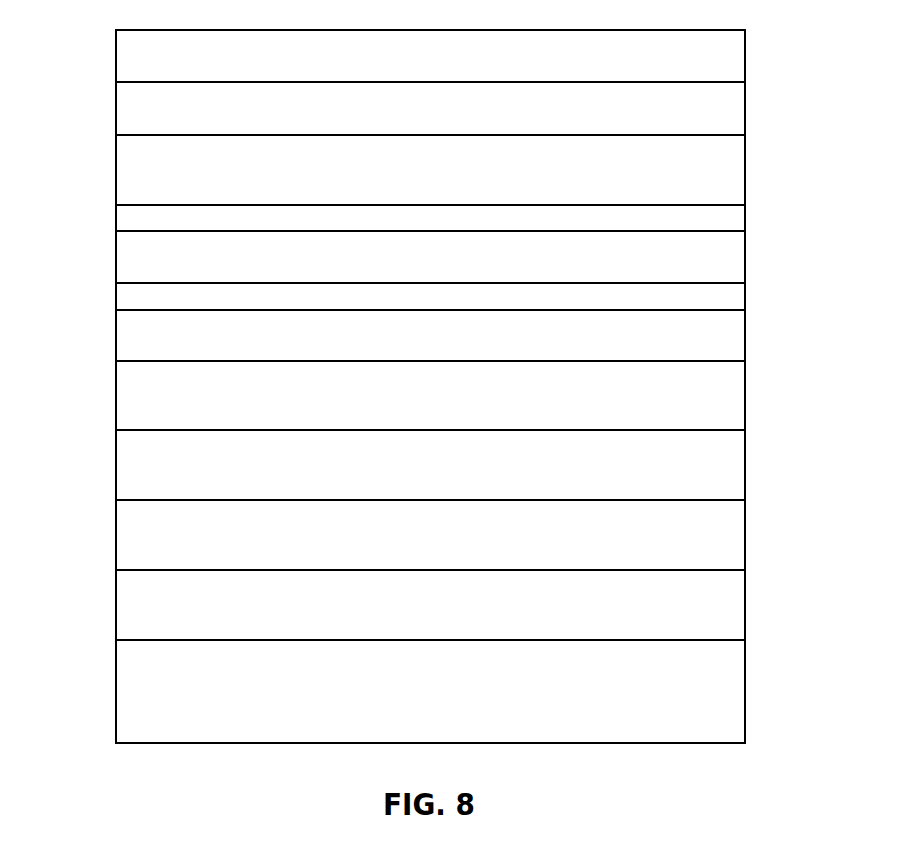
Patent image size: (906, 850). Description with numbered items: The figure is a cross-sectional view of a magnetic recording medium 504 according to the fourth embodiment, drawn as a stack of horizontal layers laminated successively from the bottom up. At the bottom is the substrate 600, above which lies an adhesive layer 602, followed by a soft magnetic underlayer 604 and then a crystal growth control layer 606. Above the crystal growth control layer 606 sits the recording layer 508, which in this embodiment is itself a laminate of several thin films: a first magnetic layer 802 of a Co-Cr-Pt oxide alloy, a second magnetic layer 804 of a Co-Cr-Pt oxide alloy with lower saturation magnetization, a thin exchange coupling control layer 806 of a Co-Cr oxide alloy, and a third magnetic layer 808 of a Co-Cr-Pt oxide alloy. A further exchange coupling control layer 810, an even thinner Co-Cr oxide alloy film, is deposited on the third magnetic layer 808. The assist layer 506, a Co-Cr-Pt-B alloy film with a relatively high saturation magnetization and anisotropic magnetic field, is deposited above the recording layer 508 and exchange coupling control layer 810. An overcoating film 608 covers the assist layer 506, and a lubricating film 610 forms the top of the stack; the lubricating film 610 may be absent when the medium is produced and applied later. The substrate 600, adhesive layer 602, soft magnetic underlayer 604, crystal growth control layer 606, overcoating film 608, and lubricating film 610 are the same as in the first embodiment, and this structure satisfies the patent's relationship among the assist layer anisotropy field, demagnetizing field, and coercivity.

The magnetic recording medium 504 is at (431, 387).
The recording layer 508 is at (381, 318).
The assist layer 506 is at (412, 180).
The substrate 600 is at (430, 691).
The adhesive layer 602 is at (412, 616).
The soft magnetic underlayer 604 is at (412, 546).
The crystal growth control layer 606 is at (412, 476).
The overcoating film 608 is at (412, 119).
The lubricating film 610 is at (412, 67).
The first magnetic layer 802 is at (412, 406).
The second magnetic layer 804 is at (412, 346).
The exchange coupling control layer 806 is at (412, 307).
The third magnetic layer 808 is at (412, 268).
The exchange coupling control layer 810 is at (412, 228).